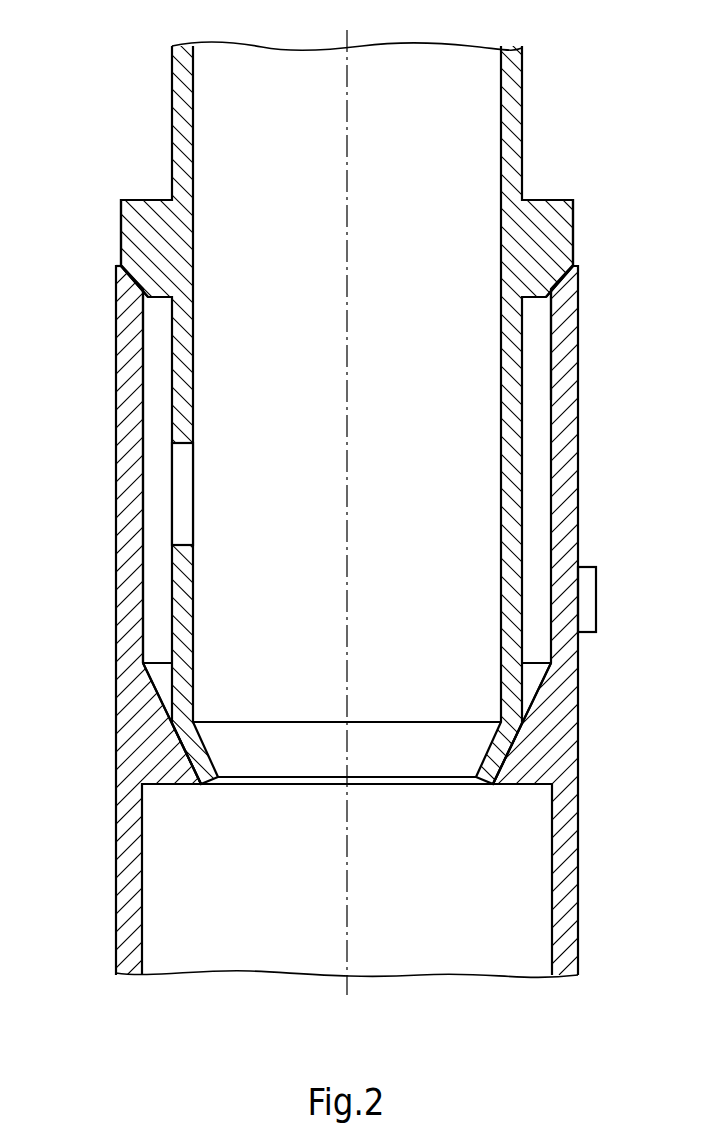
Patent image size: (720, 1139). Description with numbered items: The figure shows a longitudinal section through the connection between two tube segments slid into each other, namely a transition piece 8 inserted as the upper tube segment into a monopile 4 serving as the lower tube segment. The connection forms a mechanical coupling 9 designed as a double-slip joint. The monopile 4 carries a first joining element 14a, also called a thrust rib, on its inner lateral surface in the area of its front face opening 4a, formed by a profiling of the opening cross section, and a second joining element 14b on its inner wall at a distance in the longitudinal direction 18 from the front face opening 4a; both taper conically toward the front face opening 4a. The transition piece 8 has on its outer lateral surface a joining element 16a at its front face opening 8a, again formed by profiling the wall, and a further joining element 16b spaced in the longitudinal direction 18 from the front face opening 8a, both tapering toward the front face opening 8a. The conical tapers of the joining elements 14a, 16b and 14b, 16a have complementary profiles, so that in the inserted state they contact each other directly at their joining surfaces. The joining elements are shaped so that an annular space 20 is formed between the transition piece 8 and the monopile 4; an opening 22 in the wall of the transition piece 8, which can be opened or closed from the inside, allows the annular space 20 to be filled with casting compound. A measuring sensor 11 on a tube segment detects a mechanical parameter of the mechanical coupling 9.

The monopile 4 is at (567, 477).
The front face opening 4a is at (538, 318).
The transition piece 8 is at (510, 110).
The front face opening 8a is at (309, 814).
The mechanical coupling 9 is at (96, 238).
The measuring sensor 11 is at (596, 598).
The first joining element 14a is at (562, 278).
The second joining element 14b is at (523, 762).
The joining element 16a is at (440, 762).
The further joining element 16b is at (552, 232).
The longitudinal direction 18 is at (347, 360).
The annular space 20 is at (157, 365).
The opening 22 is at (183, 493).